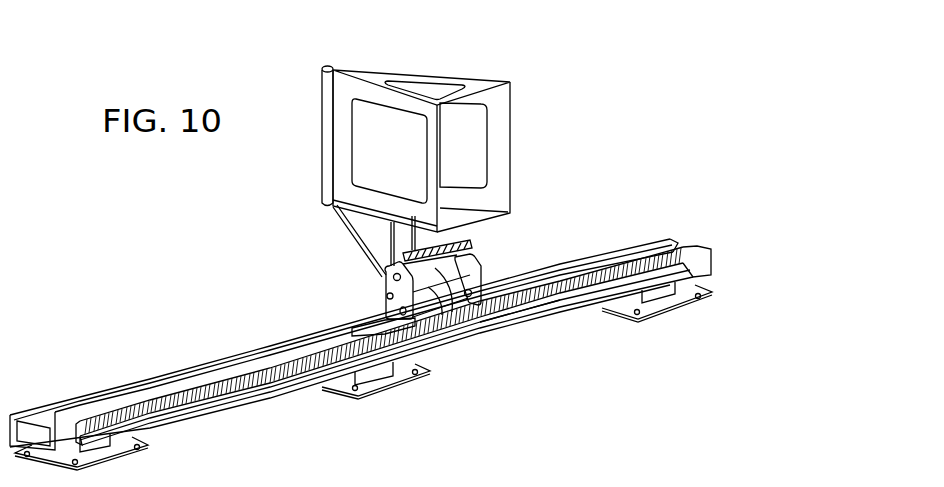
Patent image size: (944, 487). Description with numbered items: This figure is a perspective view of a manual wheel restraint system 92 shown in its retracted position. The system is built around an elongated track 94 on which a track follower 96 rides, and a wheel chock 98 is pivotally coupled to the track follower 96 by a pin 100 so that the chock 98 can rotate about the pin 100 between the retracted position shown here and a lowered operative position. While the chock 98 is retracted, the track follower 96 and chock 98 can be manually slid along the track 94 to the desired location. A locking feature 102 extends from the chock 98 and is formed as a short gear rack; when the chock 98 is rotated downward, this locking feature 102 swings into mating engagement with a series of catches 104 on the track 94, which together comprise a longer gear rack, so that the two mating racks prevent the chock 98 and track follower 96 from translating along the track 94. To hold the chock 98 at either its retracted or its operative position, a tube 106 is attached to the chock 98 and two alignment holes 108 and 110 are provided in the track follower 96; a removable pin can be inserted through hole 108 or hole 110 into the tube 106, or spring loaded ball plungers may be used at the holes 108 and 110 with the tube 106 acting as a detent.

The wheel restraint system 92 is at (588, 158).
The track 94 is at (138, 380).
The track follower 96 is at (348, 326).
The wheel chock 98 is at (437, 77).
The pin 100 is at (380, 300).
The locking feature 102 is at (473, 257).
The catches 104 is at (272, 398).
The tube 106 is at (470, 343).
The alignment hole 108 is at (380, 285).
The alignment hole 110 is at (448, 343).